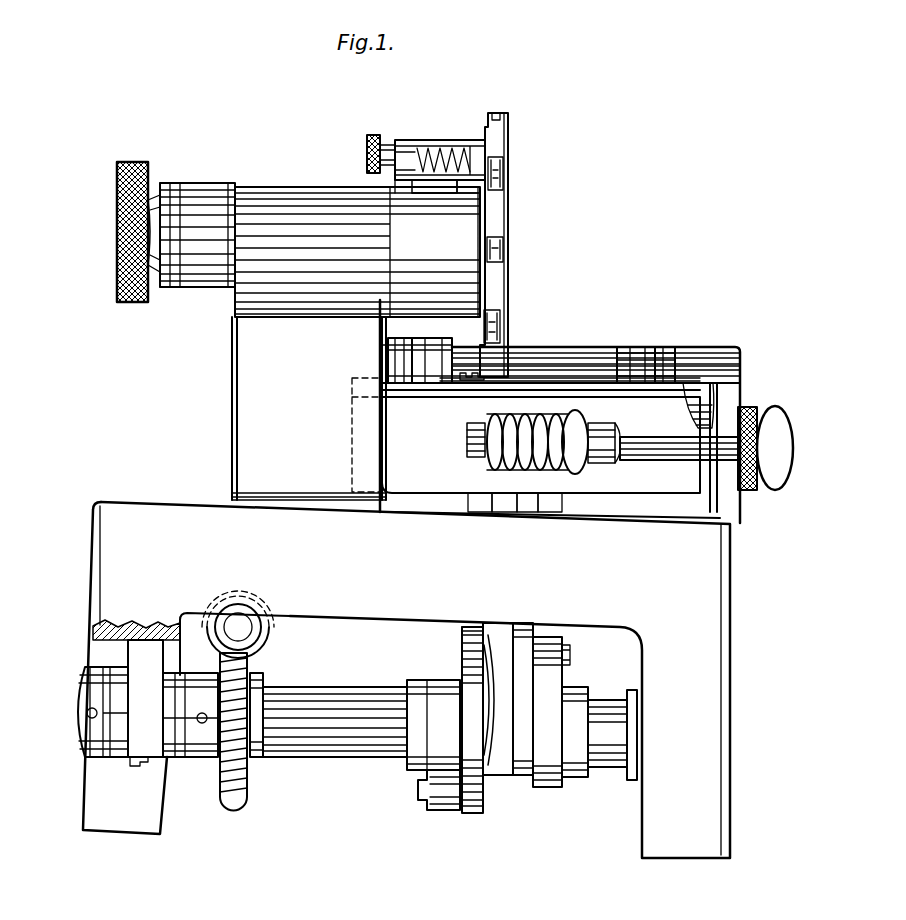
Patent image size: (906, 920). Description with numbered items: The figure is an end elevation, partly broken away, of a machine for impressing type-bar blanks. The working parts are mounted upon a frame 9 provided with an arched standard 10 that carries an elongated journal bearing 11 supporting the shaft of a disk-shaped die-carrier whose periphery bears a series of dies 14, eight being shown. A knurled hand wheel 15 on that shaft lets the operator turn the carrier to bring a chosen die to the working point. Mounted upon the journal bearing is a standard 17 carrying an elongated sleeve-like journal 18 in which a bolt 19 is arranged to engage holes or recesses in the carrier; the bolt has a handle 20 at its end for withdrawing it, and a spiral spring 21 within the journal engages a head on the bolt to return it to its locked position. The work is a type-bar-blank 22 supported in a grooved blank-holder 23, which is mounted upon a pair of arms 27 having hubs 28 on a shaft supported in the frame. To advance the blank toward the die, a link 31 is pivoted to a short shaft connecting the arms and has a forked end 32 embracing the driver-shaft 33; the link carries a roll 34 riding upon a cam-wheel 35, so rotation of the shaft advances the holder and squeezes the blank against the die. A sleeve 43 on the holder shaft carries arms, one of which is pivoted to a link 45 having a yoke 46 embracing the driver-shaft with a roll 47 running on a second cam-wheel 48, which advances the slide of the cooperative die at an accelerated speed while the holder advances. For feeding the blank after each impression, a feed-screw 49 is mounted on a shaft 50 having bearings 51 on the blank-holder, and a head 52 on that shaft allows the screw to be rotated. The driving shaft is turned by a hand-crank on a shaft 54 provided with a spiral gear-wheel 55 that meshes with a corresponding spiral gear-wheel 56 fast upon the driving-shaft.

The frame 9 is at (115, 570).
The arched standard 10 is at (247, 378).
The elongated journal bearing 11 is at (205, 190).
The dies 14 is at (504, 252).
The knurled hand wheel 15 is at (133, 302).
The standard 17 is at (400, 184).
The sleeve-like journal 18 is at (432, 142).
The bolt 19 is at (495, 160).
The handle 20 is at (372, 135).
The spiral spring 21 is at (418, 148).
The type-bar-blank 22 is at (505, 377).
The blank-holder 23 is at (678, 480).
The arms 27 is at (447, 328).
The hubs 28 is at (400, 338).
The link 31 is at (530, 635).
The forked end 32 is at (523, 770).
The driver-shaft 33 is at (372, 730).
The roll 34 is at (567, 655).
The cam-wheel 35 is at (560, 780).
The sleeve 43 is at (580, 362).
The link 45 is at (478, 630).
The yoke 46 is at (462, 665).
The roll 47 is at (445, 790).
The cam-wheel 48 is at (440, 735).
The feed-screw 49 is at (522, 418).
The shaft 50 is at (672, 455).
The bearings 51 is at (468, 447).
The head 52 is at (765, 407).
The shaft 54 is at (246, 628).
The spiral gear-wheel 55 is at (262, 646).
The spiral gear-wheel 56 is at (247, 780).